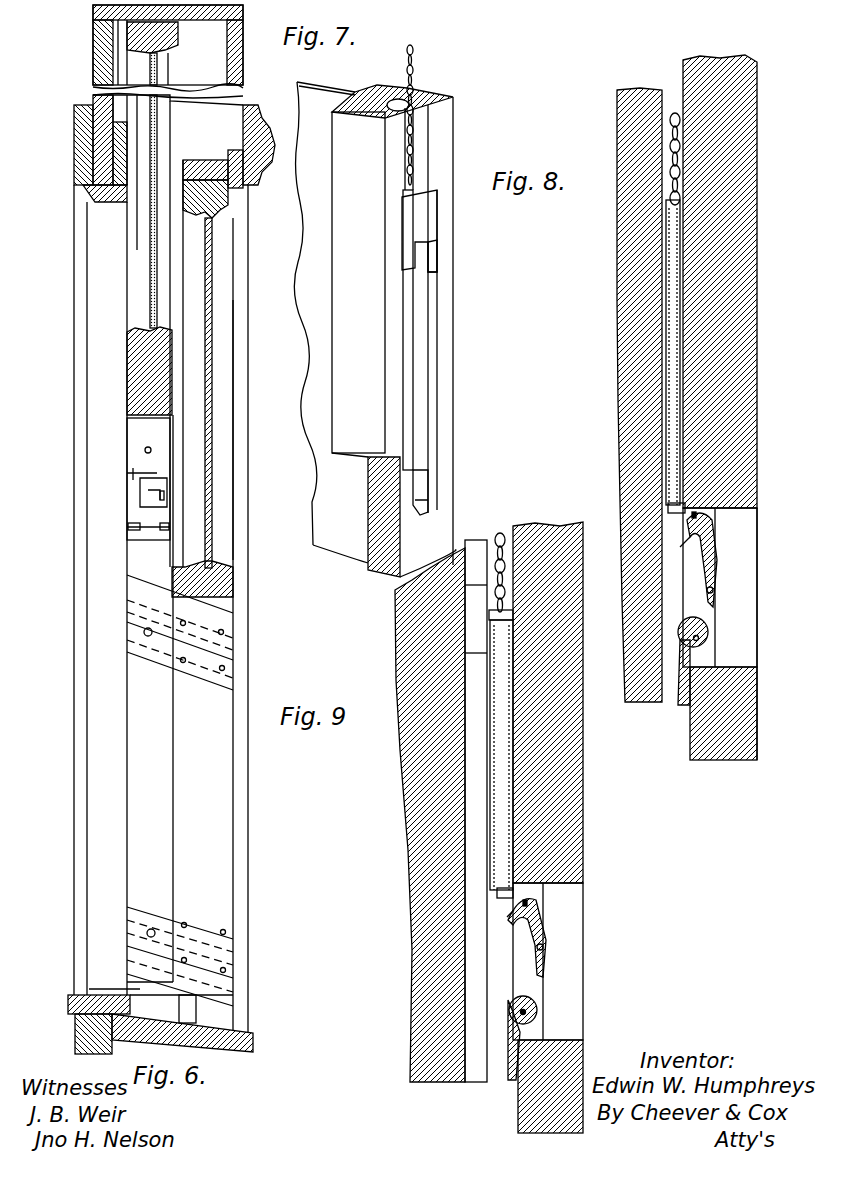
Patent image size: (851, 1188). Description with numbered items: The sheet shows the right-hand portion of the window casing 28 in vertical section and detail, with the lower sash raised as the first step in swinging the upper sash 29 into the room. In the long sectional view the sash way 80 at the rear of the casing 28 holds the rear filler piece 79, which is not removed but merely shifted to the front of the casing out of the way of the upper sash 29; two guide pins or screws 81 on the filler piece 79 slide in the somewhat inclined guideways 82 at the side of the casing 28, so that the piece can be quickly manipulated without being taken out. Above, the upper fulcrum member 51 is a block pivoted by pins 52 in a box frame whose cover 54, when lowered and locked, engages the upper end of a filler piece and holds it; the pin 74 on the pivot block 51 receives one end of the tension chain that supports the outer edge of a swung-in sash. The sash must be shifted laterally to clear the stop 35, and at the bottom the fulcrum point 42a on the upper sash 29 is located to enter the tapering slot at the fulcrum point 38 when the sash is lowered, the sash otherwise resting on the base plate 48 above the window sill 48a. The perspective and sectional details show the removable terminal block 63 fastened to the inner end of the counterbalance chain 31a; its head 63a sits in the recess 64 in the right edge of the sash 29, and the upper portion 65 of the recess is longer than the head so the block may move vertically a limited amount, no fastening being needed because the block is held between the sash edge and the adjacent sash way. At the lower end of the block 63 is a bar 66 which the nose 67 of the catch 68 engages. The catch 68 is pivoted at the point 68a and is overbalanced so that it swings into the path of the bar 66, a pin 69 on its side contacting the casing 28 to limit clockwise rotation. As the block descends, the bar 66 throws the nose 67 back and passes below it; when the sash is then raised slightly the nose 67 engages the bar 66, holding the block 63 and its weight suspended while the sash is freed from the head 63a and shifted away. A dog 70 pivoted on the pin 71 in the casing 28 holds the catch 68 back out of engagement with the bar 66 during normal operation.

In FIG. 8, the window frame or casing 28 is at (740, 236).
In FIG. 9, the window frame or casing 28 is at (565, 827).
In FIG. 7, the upper sash 29 is at (445, 408).
In FIG. 8, the upper sash 29 is at (633, 406).
In FIG. 9, the upper sash 29 is at (441, 811).
In FIG. 7, the counterbalance chain 31a is at (415, 72).
In FIG. 8, the counterbalance chain 31a is at (670, 130).
In FIG. 9, the counterbalance chain 31a is at (497, 535).
In FIG. 6, the stop 35 is at (100, 583).
In FIG. 6, the fulcrum point 38 is at (190, 1005).
In FIG. 6, the fulcrum point 42a is at (180, 603).
In FIG. 6, the base plate 48 is at (235, 1025).
In FIG. 6, the window sill 48a is at (82, 995).
In FIG. 6, the upper fulcrum member 51 is at (135, 500).
In FIG. 6, the pins 52 is at (127, 473).
In FIG. 6, the cover 54 is at (162, 460).
In FIG. 7, the terminal block 63 is at (415, 318).
In FIG. 8, the terminal block 63 is at (675, 313).
In FIG. 9, the terminal block 63 is at (505, 752).
In FIG. 7, the head 63a is at (437, 213).
In FIG. 7, the recess 64 is at (430, 353).
In FIG. 7, the upper portion of the slot 65 is at (437, 248).
In FIG. 7, the bar 66 is at (425, 492).
In FIG. 8, the bar 66 is at (687, 513).
In FIG. 9, the bar 66 is at (513, 923).
In FIG. 8, the nose 67 is at (680, 547).
In FIG. 9, the nose 67 is at (507, 917).
In FIG. 8, the catch 68 is at (717, 551).
In FIG. 9, the catch 68 is at (547, 932).
In FIG. 8, the pivot point 68a is at (719, 524).
In FIG. 9, the pivot point 68a is at (540, 890).
In FIG. 8, the pin 69 is at (707, 578).
In FIG. 9, the pin 69 is at (547, 948).
In FIG. 8, the dog 70 is at (685, 708).
In FIG. 9, the dog 70 is at (510, 1082).
In FIG. 8, the pin 71 is at (700, 638).
In FIG. 9, the pin 71 is at (530, 1010).
In FIG. 6, the pin 74 is at (165, 494).
In FIG. 6, the rear filler piece 79 is at (158, 842).
In FIG. 6, the sash way 80 is at (205, 812).
In FIG. 6, the guide pins or screws 81 is at (148, 636).
In FIG. 6, the guideways 82 is at (215, 662).